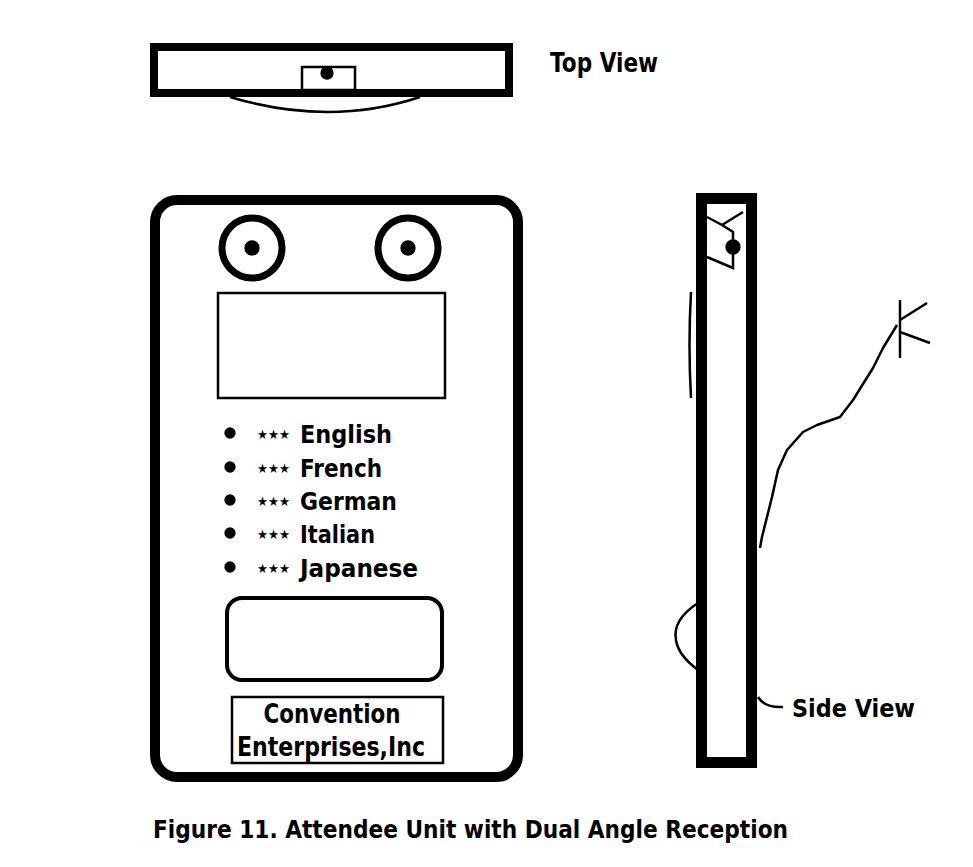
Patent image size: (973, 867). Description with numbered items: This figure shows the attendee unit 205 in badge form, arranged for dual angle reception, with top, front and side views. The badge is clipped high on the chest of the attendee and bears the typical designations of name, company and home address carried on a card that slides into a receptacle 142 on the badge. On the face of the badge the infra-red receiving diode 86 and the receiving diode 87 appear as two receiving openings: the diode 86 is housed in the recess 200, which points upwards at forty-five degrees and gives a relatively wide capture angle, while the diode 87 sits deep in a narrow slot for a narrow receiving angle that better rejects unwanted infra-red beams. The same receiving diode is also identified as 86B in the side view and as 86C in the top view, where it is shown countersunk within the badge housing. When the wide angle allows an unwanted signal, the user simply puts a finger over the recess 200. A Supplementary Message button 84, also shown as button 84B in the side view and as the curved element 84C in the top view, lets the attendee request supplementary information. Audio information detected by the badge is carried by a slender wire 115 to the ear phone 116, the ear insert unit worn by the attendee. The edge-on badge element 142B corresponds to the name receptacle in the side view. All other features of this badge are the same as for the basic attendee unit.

The attendee unit 205 is at (523, 518).
The infra-red receiving diode 86C is at (329, 66).
The supplementary message display (top view) 84C is at (390, 105).
The infra-red receiving diode 86 is at (256, 244).
The receiving diode 87 is at (412, 244).
The receptacle for name designations 142 is at (445, 356).
The Supplementary Message button 84 is at (452, 610).
The recess (wide angle slot) 200 is at (755, 205).
The infra-red receiving diode 86B is at (740, 245).
The name badge display (side view) 142B is at (688, 353).
The ear phone 116 is at (883, 348).
The slender wire 115 is at (840, 420).
The button (supplementary information) 84B is at (675, 642).